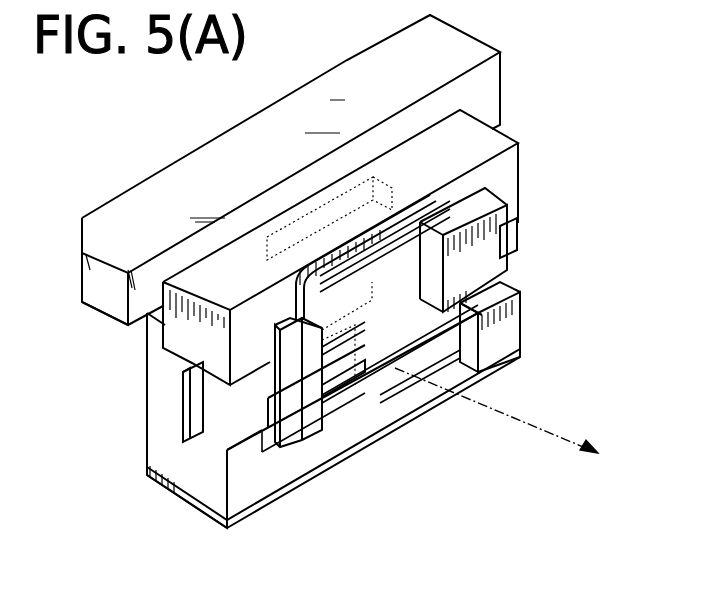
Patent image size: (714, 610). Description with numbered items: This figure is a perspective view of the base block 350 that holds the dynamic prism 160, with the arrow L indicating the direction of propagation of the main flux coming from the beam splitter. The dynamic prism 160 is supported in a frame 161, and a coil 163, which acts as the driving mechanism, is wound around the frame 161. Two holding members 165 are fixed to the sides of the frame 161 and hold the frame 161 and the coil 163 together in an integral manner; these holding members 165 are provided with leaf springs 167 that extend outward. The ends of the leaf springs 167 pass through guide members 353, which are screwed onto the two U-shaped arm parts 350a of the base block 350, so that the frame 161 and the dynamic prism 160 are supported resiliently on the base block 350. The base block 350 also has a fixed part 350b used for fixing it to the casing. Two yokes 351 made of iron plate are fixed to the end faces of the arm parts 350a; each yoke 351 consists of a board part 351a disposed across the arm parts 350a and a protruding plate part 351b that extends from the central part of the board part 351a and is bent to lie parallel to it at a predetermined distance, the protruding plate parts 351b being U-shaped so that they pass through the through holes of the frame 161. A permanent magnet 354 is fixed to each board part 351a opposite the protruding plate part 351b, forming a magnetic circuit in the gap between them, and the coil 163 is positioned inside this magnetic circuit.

The base block 350 is at (160, 482).
The U-shaped arm parts 350a is at (512, 332).
The fixed part 350b is at (130, 203).
The yoke 351 is at (597, 93).
The board part 351a is at (498, 128).
The protruding plate part 351b is at (513, 197).
The guide member 353 is at (503, 273).
The permanent magnet 354 is at (418, 228).
The dynamic prism 160 is at (277, 312).
The frame 161 is at (488, 372).
The coil 163 is at (291, 490).
The holding member 165 is at (508, 299).
The leaf spring 167 is at (505, 240).
The arrow L is at (567, 427).